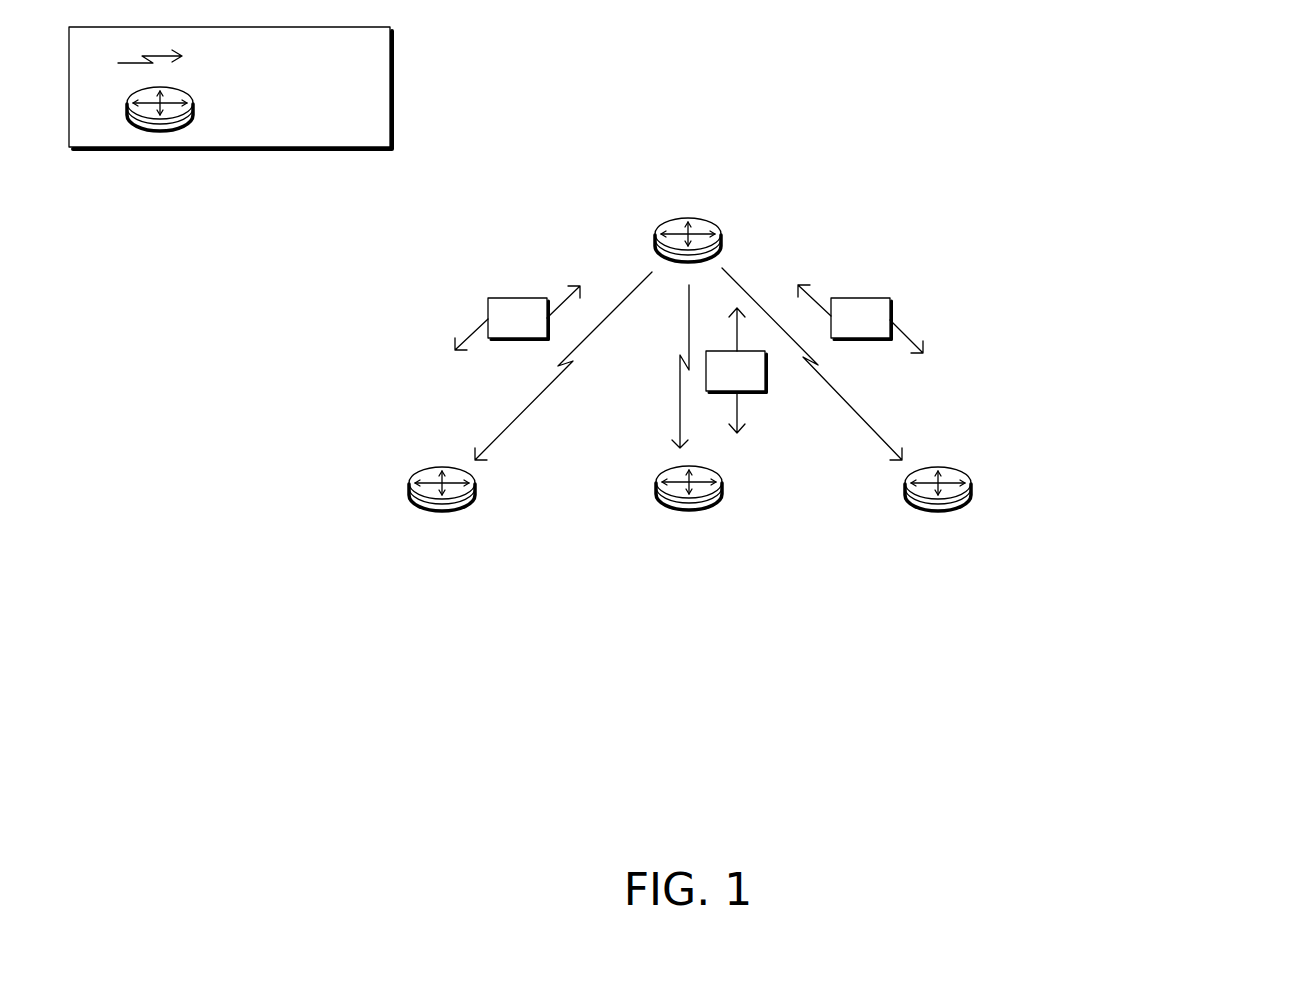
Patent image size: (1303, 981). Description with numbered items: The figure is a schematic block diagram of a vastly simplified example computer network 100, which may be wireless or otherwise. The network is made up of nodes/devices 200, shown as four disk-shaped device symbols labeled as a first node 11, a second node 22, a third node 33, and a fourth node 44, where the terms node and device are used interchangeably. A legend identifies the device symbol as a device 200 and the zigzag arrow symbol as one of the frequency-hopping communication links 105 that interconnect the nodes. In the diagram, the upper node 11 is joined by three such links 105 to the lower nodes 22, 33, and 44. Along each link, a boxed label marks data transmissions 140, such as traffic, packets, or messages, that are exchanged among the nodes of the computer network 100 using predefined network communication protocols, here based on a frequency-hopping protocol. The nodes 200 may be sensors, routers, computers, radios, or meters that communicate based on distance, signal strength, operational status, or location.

The computer network 100 is at (1214, 89).
The frequency-hopping communication links 105 is at (510, 253).
The nodes/devices 200 is at (234, 109).
The node 11 is at (680, 227).
The node 22 is at (442, 507).
The node 33 is at (689, 506).
The node 44 is at (938, 507).
The data transmissions 140 is at (503, 329).